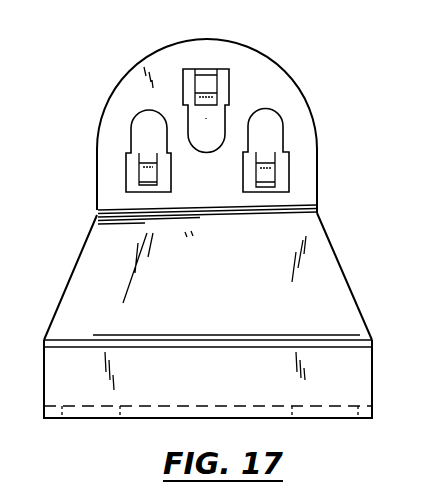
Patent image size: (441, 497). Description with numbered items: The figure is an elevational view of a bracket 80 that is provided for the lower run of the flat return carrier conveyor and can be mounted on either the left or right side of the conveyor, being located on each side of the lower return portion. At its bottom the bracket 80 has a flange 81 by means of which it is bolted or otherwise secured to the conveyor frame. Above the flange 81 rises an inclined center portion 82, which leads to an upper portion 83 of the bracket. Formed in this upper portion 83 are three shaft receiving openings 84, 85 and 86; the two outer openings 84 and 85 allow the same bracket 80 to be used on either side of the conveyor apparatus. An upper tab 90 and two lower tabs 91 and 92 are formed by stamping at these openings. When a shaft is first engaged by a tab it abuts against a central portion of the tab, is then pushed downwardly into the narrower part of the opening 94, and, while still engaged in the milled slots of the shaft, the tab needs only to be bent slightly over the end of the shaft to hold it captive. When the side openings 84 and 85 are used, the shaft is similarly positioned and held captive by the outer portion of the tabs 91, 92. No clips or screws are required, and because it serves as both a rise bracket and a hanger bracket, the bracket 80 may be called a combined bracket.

The bracket 80 is at (239, 228).
The flange 81 is at (350, 400).
The inclined center portion 82 is at (300, 263).
The upper portion 83 is at (312, 136).
The shaft receiving opening 84 is at (311, 145).
The shaft receiving opening 85 is at (105, 152).
The shaft receiving opening 86 is at (266, 88).
The upper tab 90 is at (211, 82).
The lower tab 91 is at (270, 173).
The lower tab 92 is at (146, 176).
The opening 94 is at (215, 132).